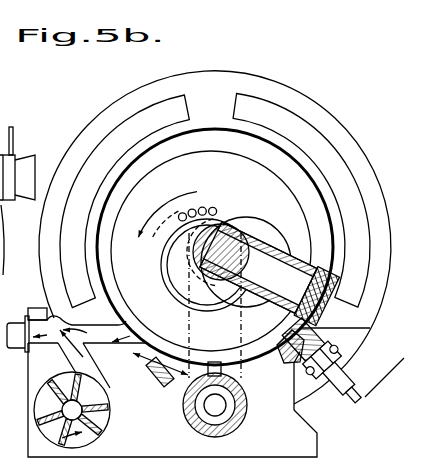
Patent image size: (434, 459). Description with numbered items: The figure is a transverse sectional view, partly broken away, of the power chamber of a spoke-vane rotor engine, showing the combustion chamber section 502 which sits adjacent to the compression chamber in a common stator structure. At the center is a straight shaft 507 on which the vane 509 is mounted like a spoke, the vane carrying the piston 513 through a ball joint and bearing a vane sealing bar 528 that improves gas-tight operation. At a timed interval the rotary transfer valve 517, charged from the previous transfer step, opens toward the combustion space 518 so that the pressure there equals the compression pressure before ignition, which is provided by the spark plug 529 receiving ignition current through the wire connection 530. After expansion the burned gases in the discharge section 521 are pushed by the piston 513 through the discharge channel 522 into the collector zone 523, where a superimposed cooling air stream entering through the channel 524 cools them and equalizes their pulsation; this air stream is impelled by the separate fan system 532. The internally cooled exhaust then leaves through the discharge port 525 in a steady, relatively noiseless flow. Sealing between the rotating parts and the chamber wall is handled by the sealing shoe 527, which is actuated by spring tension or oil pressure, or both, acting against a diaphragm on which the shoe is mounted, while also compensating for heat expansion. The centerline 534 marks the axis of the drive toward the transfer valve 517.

The combustion chamber section 502 is at (295, 102).
The straight shaft 507 is at (228, 217).
The vane 509 is at (257, 244).
The piston 513 is at (213, 365).
The transfer valve 517 is at (187, 410).
The combustion space 518 is at (288, 340).
The discharge section 521 is at (205, 152).
The discharge channel 522 is at (132, 337).
The collector zone 523 is at (46, 308).
The channel 524 is at (88, 358).
The discharge port 525 is at (22, 348).
The sealing shoe 527 is at (172, 361).
The vane sealing bar 528 is at (306, 286).
The spark plug 529 is at (339, 382).
The wire connection 530 is at (400, 358).
The fan system 532 is at (33, 428).
The axis line 534 is at (189, 268).